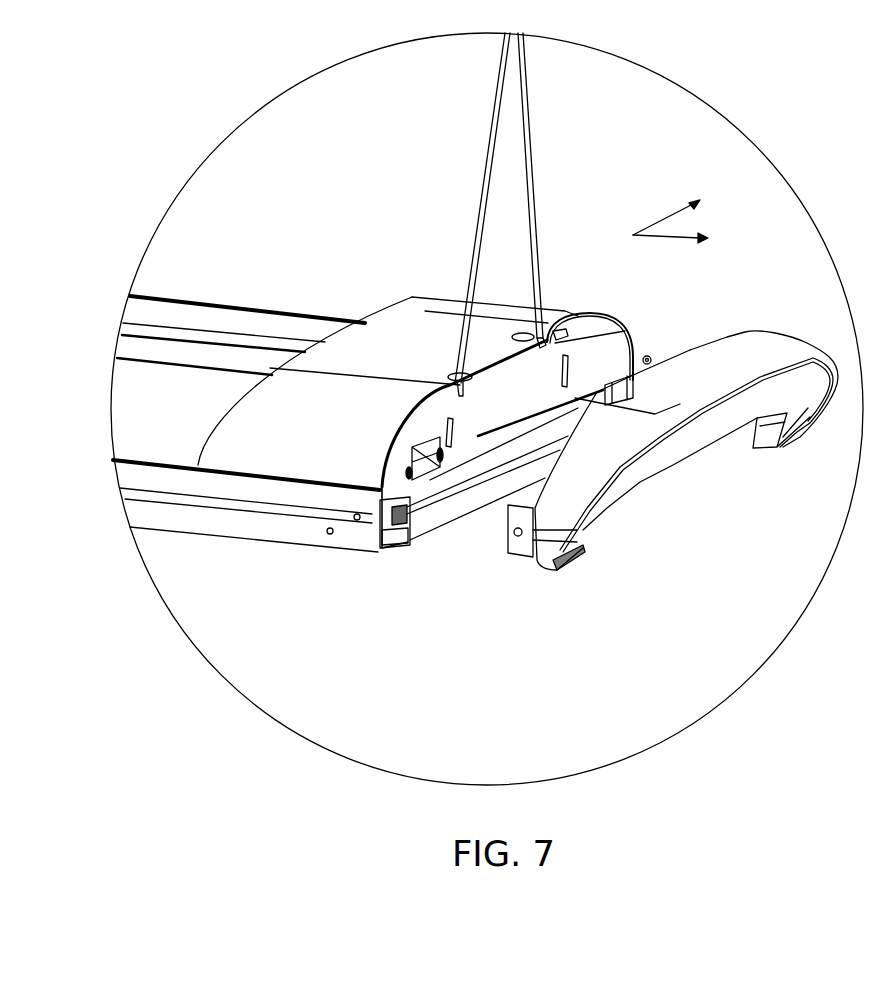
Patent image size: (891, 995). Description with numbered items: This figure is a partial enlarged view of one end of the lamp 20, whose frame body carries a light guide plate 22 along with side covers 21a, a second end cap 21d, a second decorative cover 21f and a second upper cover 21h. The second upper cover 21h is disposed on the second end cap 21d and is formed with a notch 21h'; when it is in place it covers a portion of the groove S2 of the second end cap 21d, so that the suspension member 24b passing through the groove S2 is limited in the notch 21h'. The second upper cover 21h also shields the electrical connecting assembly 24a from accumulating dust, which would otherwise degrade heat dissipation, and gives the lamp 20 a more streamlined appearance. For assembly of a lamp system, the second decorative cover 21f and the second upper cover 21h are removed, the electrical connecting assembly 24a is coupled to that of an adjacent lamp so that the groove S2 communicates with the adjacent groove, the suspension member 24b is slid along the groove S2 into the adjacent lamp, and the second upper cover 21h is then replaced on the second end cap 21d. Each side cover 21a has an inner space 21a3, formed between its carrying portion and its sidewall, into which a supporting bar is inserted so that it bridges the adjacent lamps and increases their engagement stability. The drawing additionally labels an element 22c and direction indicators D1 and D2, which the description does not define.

The lamp 20 is at (227, 273).
The side cover 21a is at (252, 528).
The inner space 21a3 is at (383, 553).
The second upper cover 21h is at (388, 342).
The notch 21h' is at (559, 283).
The second end cap 21d is at (590, 325).
The second decorative cover 21f is at (773, 350).
The light guide plate 22 is at (412, 520).
The pivot bracket 22c is at (493, 488).
The electrical connecting assembly 24a is at (430, 487).
The suspension member 24b is at (531, 156).
The groove S2 is at (633, 337).
The first direction D1 is at (693, 244).
The second direction D2 is at (690, 211).